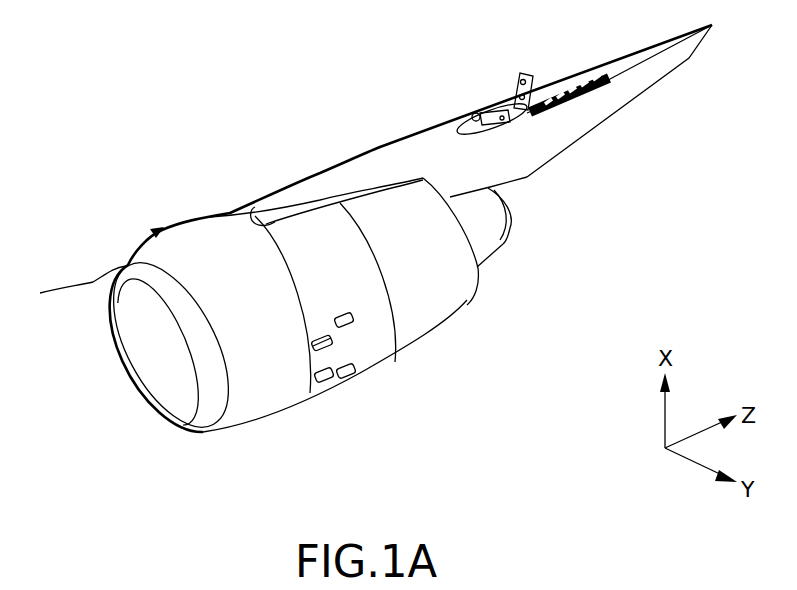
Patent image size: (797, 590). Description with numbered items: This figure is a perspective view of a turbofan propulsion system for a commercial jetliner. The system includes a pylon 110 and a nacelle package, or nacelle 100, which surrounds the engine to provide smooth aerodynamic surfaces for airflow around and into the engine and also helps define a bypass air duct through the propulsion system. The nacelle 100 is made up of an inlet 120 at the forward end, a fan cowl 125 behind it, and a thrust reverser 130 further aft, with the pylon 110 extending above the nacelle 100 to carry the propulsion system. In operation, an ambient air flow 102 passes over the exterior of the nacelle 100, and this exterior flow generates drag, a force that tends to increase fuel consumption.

The nacelle 100 is at (171, 190).
The ambient air flow 102 is at (90, 282).
The pylon 110 is at (588, 115).
The inlet 120 is at (280, 397).
The fan cowl 125 is at (373, 347).
The thrust reverser 130 is at (452, 287).